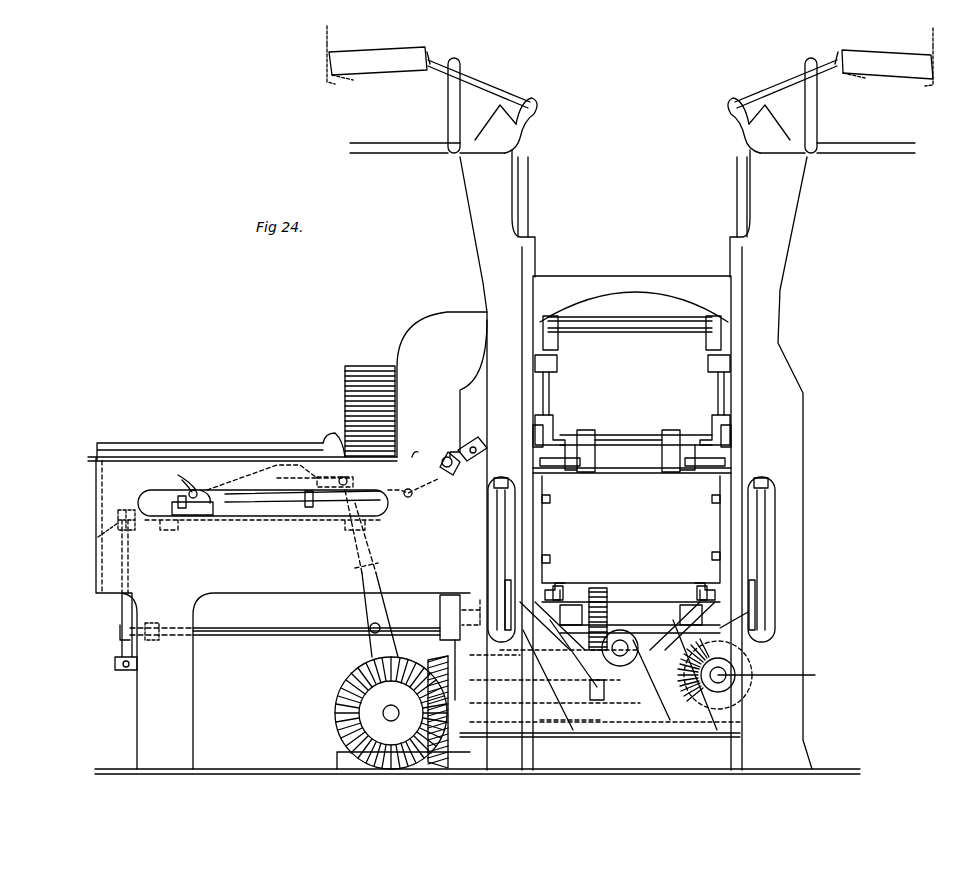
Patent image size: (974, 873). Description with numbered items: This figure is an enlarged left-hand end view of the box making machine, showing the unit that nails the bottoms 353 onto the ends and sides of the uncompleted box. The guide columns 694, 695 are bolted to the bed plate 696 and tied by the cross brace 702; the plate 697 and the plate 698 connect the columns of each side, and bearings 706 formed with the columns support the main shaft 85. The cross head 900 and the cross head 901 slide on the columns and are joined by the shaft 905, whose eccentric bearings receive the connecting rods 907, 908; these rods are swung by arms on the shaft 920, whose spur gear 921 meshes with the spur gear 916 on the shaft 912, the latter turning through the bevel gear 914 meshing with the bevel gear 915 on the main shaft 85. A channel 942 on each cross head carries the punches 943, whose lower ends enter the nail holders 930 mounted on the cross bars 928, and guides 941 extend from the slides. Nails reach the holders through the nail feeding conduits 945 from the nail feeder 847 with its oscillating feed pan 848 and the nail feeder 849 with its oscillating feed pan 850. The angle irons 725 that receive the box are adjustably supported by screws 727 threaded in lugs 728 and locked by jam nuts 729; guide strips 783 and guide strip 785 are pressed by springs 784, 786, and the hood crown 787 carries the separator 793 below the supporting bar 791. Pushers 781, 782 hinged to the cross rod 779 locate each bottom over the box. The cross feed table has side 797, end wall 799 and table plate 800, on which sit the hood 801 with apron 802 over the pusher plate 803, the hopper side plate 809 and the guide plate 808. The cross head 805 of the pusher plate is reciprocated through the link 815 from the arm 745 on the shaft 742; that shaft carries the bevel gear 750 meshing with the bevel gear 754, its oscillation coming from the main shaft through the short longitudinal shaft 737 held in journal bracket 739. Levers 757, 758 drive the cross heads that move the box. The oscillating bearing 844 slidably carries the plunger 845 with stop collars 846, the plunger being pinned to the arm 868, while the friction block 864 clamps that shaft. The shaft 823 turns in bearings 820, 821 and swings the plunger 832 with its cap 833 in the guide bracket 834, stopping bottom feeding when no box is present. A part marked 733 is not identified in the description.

The guide column 695 is at (485, 283).
The guide column 694 is at (806, 414).
The nail feeding conduits 945 is at (528, 212).
The nail feeder 849 is at (480, 86).
The nail feeder 847 is at (785, 86).
The oscillating feed pan 850 is at (377, 55).
The oscillating feed pan 848 is at (887, 56).
The cross brace 702 is at (632, 523).
The shaft 905 is at (620, 333).
The cross head 901 is at (558, 340).
The cross head 900 is at (706, 340).
The channel 942 is at (557, 366).
The punches 943 is at (549, 395).
The nail holders 930 is at (553, 425).
The cross bar 928 is at (533, 438).
The guides 941 is at (540, 462).
The separator 793 is at (662, 455).
The pusher 782 is at (572, 455).
The cross rod 779 is at (615, 440).
The supporting bar 791 is at (648, 440).
The pusher 781 is at (688, 455).
The side plate 809 is at (442, 384).
The bottoms 353 is at (368, 360).
The hood 801 is at (240, 447).
The apron 802 is at (333, 436).
The pusher plate 803 is at (412, 452).
The table plate 800 is at (140, 465).
The end wall 799 is at (95, 546).
The plunger 832 is at (128, 552).
The cap 833 is at (125, 505).
The guide bracket 834 is at (110, 525).
The guide plate 808 is at (262, 525).
The plunger 845 is at (302, 503).
The oscillating bearing 844 is at (192, 507).
The stop collars 846 is at (178, 502).
The cross head 805 is at (226, 466).
The link 815 is at (290, 478).
The arm 745 is at (372, 617).
The friction block 864 is at (470, 436).
The arm 868 is at (425, 490).
The lever 758 is at (497, 530).
The lever 757 is at (765, 530).
The connecting rod 908 is at (505, 595).
The connecting rod 907 is at (755, 595).
The plate 698 is at (542, 522).
The guide strip 785 is at (550, 499).
The crown 787 is at (612, 475).
The spring 786 is at (712, 503).
The plate 697 is at (720, 532).
The guide strips 783 is at (712, 556).
The angle irons 725 is at (560, 583).
The screws 727 is at (560, 586).
The spring 784 is at (731, 570).
The jam nuts 729 is at (545, 605).
The lugs 728 is at (633, 615).
The spur gear 921 is at (607, 600).
The shaft 920 is at (640, 626).
The journal bracket 739 is at (632, 652).
The short longitudinal shaft 737 is at (585, 653).
The shaft 912 is at (545, 683).
The spur gear 916 is at (582, 694).
The bar 733 is at (605, 713).
The bearings 706 is at (730, 665).
The main shaft 85 is at (815, 675).
The bevel gear 915 is at (731, 621).
The bevel gear 914 is at (600, 740).
The bed plate 696 is at (477, 754).
The second short horizontal shaft 742 is at (395, 697).
The bevel gear 750 is at (333, 712).
The bevel gear 754 is at (435, 655).
The shaft 823 is at (265, 640).
The bearing 821 is at (155, 623).
The bearing 820 is at (485, 610).
The side 797 is at (268, 560).